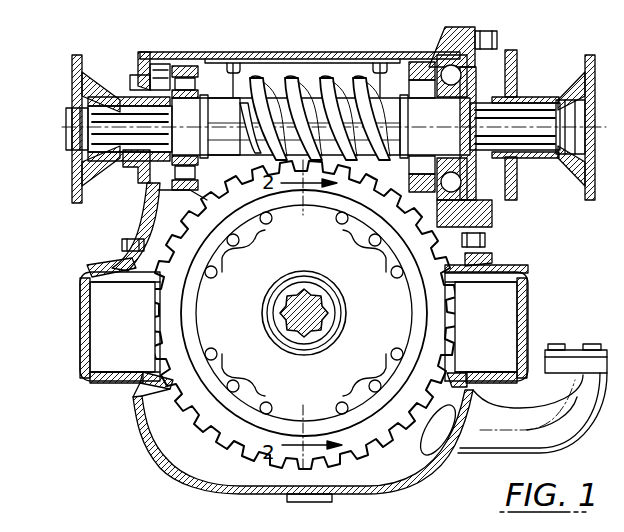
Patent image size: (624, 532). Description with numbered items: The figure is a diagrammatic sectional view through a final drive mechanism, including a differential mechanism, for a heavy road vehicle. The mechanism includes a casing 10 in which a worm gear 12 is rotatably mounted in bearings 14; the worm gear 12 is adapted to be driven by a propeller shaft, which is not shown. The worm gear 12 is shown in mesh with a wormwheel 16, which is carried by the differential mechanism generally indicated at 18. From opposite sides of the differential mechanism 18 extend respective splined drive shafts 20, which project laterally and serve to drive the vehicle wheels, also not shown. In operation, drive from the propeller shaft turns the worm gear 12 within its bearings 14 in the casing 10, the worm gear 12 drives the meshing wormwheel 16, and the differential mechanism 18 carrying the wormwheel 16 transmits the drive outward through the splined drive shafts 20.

The casing 10 is at (82, 364).
The worm gear 12 is at (308, 78).
The bearings 14 is at (182, 66).
The wormwheel 16 is at (448, 327).
The differential mechanism 18 is at (227, 348).
The splined drive shafts 20 is at (317, 297).